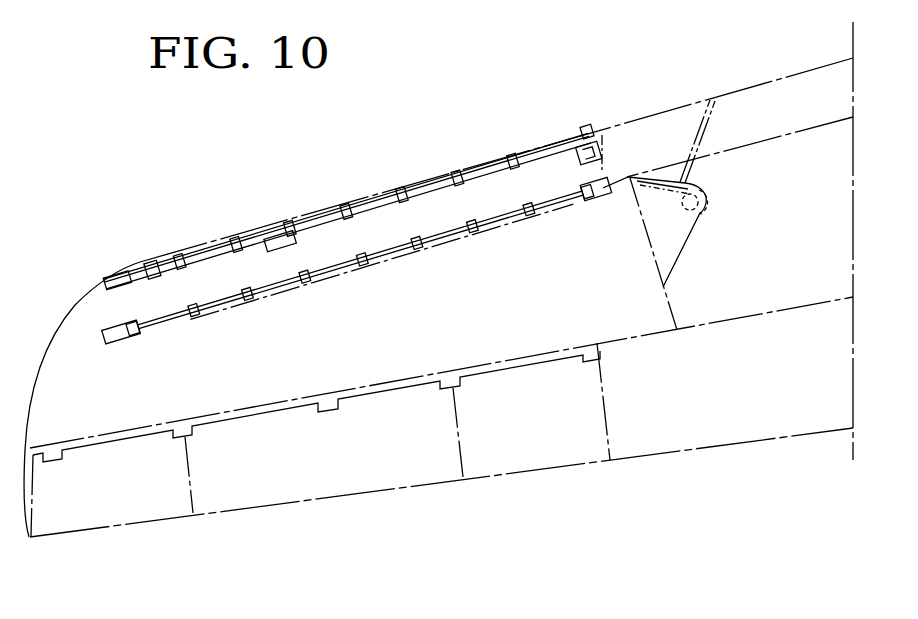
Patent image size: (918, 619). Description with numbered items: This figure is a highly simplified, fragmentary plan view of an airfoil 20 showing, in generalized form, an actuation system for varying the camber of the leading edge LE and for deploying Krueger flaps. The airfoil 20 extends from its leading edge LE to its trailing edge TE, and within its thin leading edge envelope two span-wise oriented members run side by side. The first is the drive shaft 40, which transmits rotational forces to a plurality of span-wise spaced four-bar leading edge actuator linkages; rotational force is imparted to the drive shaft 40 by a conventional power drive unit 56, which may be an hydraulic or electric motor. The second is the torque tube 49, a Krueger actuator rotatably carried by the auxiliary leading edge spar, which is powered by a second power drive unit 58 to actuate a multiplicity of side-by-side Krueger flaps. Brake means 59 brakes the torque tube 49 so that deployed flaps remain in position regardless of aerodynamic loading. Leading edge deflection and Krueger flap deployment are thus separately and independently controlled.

The airfoil 20 is at (753, 62).
The leading edge LE is at (642, 120).
The trailing edge TE is at (482, 479).
The torque tube 49 is at (487, 170).
The brake means 59 is at (152, 268).
The second power drive unit 58 is at (592, 126).
The drive shaft 40 is at (508, 222).
The power drive unit 56 is at (597, 198).